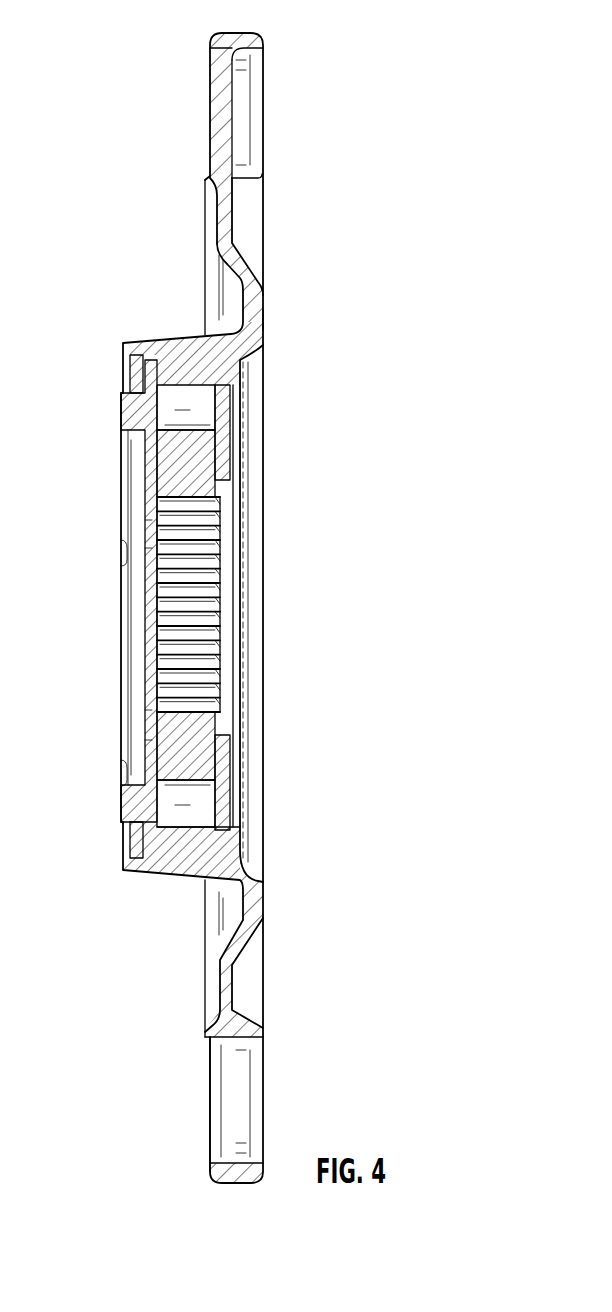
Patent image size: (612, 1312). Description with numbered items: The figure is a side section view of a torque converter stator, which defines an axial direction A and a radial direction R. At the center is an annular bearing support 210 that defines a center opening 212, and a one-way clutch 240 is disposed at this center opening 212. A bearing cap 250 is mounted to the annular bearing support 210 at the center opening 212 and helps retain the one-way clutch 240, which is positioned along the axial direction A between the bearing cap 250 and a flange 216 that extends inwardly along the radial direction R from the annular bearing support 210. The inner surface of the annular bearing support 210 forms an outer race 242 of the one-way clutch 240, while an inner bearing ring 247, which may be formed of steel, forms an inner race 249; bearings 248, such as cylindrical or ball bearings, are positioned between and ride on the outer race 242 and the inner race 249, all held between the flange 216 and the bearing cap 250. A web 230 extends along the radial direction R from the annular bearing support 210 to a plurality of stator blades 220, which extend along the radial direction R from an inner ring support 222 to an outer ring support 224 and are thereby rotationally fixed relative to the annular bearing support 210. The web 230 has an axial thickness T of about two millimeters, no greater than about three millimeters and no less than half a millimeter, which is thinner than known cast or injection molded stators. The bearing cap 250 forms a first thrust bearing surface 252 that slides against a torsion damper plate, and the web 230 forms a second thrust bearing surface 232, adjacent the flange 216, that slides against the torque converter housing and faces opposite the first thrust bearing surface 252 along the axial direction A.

The annular bearing support 210 is at (185, 342).
The center opening 212 is at (178, 615).
The flange 216 is at (228, 772).
The stator blades 220 is at (225, 105).
The inner ring support 222 is at (238, 188).
The outer ring support 224 is at (253, 40).
The web 230 is at (225, 248).
The second thrust bearing surface 232 is at (265, 318).
The one-way clutch 240 is at (172, 804).
The outer race 242 is at (197, 388).
The inner bearing ring 247 is at (212, 487).
The bearings 248 is at (200, 425).
The inner race 249 is at (195, 785).
The bearing cap 250 is at (148, 455).
The first thrust bearing surface 252 is at (115, 401).
The thickness of web T is at (282, 229).
The radial direction R is at (355, 628).
The axial direction A is at (264, 627).